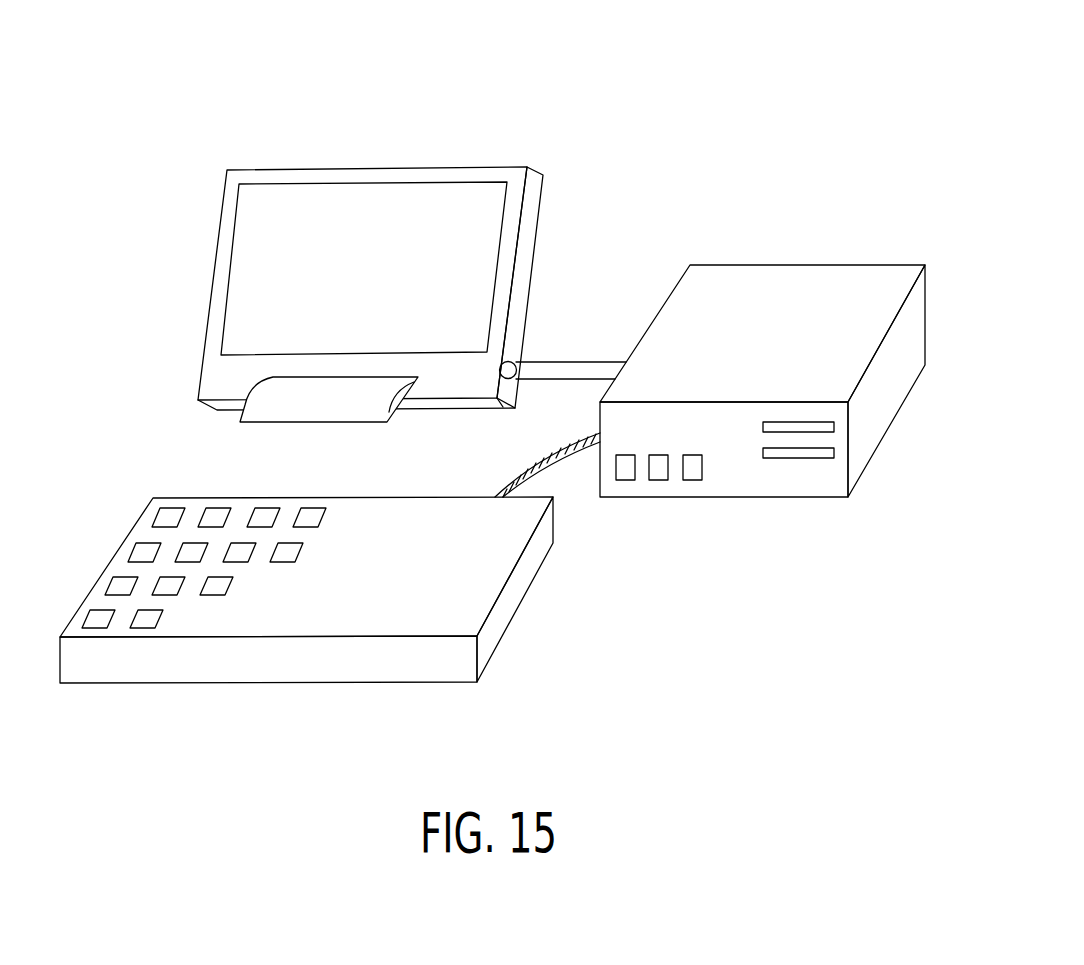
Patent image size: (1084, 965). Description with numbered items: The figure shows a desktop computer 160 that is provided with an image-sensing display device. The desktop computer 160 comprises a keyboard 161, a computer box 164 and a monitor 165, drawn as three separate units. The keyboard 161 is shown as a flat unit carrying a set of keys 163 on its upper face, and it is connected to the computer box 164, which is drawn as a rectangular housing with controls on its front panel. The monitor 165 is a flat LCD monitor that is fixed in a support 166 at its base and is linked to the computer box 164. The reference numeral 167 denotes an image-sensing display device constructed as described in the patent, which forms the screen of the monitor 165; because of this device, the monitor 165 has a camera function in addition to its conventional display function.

The desktop computer 160 is at (830, 26).
The keyboard 161 is at (523, 578).
The keys 163 is at (183, 605).
The computer box 164 is at (883, 410).
The monitor 165 is at (412, 290).
The support 166 is at (343, 407).
The image-sensing display device 167 is at (355, 198).